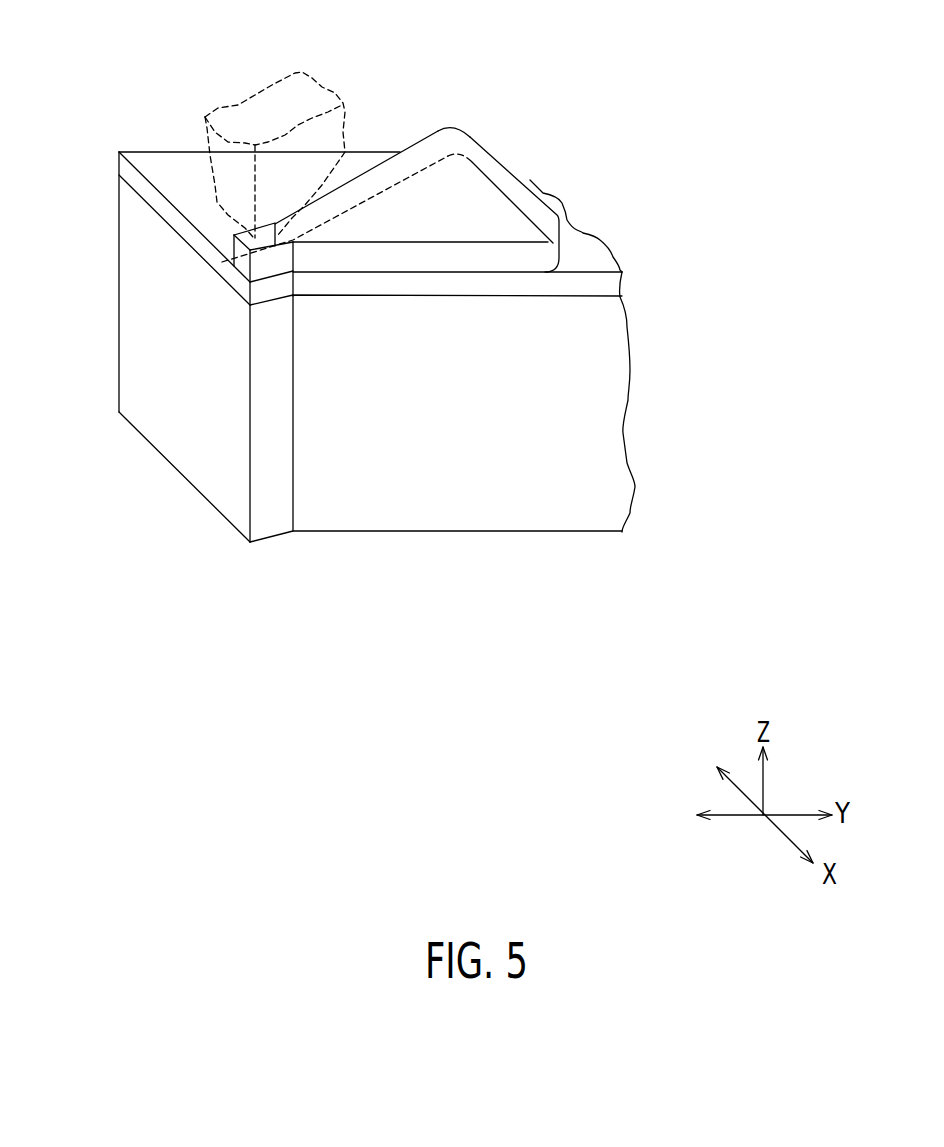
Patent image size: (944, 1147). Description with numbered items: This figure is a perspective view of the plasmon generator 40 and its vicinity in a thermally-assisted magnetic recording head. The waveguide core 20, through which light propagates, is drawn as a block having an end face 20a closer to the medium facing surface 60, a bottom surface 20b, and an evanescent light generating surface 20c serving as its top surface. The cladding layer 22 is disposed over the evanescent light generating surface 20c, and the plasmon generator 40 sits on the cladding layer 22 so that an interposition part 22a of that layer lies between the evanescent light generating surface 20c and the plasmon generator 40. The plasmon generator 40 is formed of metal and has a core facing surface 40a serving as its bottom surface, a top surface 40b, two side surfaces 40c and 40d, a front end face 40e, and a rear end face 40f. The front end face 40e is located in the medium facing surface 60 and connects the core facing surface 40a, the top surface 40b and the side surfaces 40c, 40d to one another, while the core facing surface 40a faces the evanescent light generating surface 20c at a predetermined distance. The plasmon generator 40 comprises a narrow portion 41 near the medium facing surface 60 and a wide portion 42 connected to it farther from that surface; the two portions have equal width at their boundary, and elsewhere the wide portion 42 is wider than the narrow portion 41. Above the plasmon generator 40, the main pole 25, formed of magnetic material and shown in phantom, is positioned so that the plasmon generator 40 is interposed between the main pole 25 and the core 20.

The core 20 is at (628, 405).
The end face 20a is at (140, 292).
The bottom surface 20b is at (600, 532).
The evanescent light generating surface 20c is at (584, 296).
The cladding layer 22 is at (584, 231).
The interposition part 22a is at (403, 287).
The main pole 25 is at (272, 100).
The plasmon generator 40 is at (301, 359).
The core facing surface 40a is at (445, 260).
The top surface 40b is at (445, 170).
The side surface 40c is at (376, 179).
The side surface 40d is at (495, 260).
The front end face 40e is at (233, 263).
The rear end face 40f is at (503, 178).
The narrow portion 41 is at (275, 277).
The wide portion 42 is at (356, 273).
The medium facing surface 60 is at (168, 325).